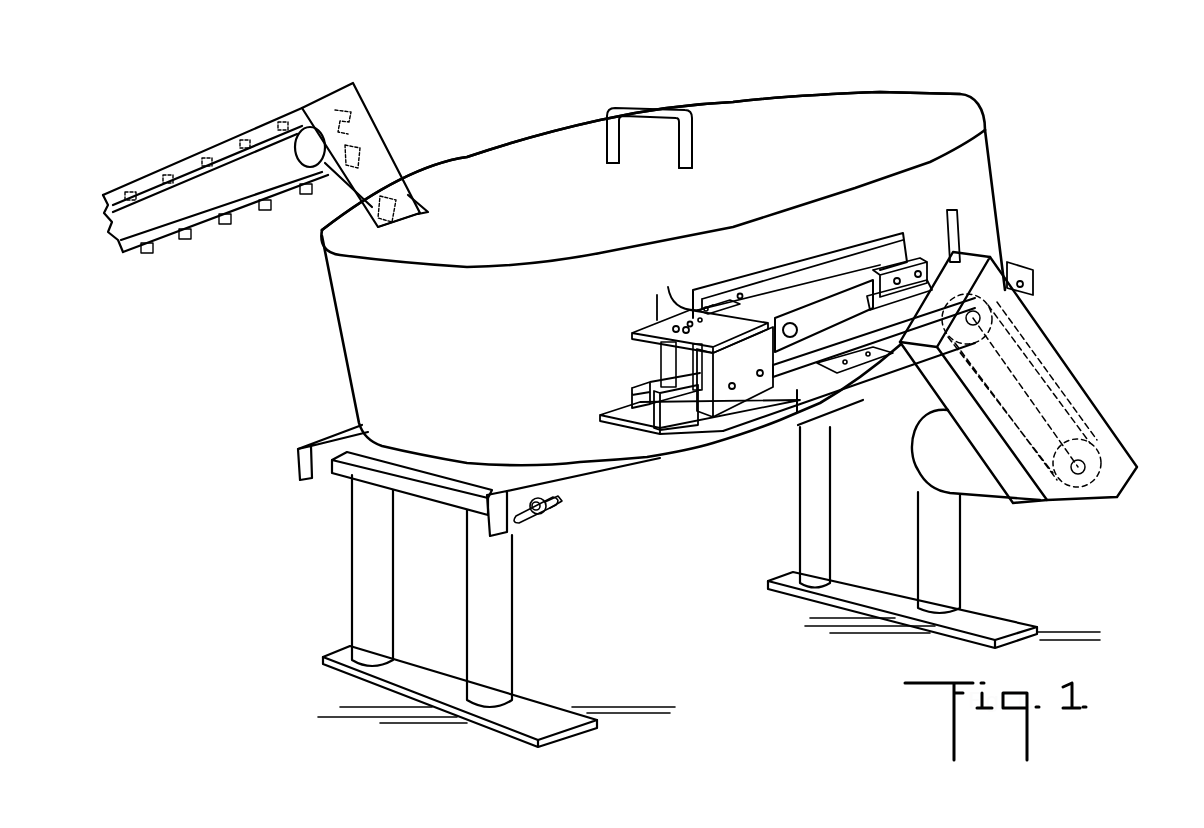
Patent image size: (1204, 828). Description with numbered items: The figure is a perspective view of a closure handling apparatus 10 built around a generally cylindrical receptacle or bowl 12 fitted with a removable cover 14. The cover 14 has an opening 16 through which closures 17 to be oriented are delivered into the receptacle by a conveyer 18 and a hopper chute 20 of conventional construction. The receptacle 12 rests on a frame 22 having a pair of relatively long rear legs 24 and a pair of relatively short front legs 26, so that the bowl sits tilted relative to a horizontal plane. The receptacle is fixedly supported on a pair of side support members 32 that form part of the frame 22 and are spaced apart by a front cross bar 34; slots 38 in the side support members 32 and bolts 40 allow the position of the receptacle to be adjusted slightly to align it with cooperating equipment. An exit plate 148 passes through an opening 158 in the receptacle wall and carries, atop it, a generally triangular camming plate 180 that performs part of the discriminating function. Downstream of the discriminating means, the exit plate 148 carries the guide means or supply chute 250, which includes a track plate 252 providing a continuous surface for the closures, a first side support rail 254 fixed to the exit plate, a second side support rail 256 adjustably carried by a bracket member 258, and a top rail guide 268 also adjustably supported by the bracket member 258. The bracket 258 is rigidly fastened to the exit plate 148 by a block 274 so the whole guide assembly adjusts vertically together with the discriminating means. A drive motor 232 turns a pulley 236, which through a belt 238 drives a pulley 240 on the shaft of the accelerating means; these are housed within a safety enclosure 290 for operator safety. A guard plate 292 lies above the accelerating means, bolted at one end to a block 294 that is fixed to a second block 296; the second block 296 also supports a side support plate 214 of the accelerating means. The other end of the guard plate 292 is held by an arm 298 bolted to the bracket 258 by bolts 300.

The closure handling apparatus 10 is at (1030, 120).
The receptacle or bowl 12 is at (322, 345).
The removable cover 14 is at (740, 114).
The opening 16 is at (418, 210).
The closures 17 is at (355, 117).
The conveyer 18 is at (214, 130).
The hopper chute 20 is at (372, 144).
The frame 22 is at (336, 548).
The rear legs 24 is at (928, 548).
The front legs 26 is at (470, 603).
The side support members 32 is at (302, 478).
The front cross bar 34 is at (448, 495).
The slots 38 is at (520, 518).
The bolts 40 is at (546, 514).
The exit plate 148 is at (781, 411).
The opening 158 is at (688, 288).
The camming plate 180 is at (858, 380).
The side support plate 214 is at (850, 325).
The drive motor 232 is at (988, 480).
The pulley 236 is at (1090, 443).
The belt 238 is at (1063, 387).
The pulley 240 is at (983, 325).
The guide means or supply chute 250 is at (608, 372).
The track plate 252 is at (612, 414).
The first side support rail 254 is at (680, 430).
The second side support rail 256 is at (658, 388).
The bracket member 258 is at (646, 332).
The top rail guide 268 is at (628, 398).
The block 274 is at (750, 395).
The safety enclosure 290 is at (1055, 345).
The guard plate 292 is at (870, 256).
The block 294 is at (940, 258).
The second block 296 is at (862, 360).
The arm 298 is at (712, 300).
The bolts 300 is at (668, 302).